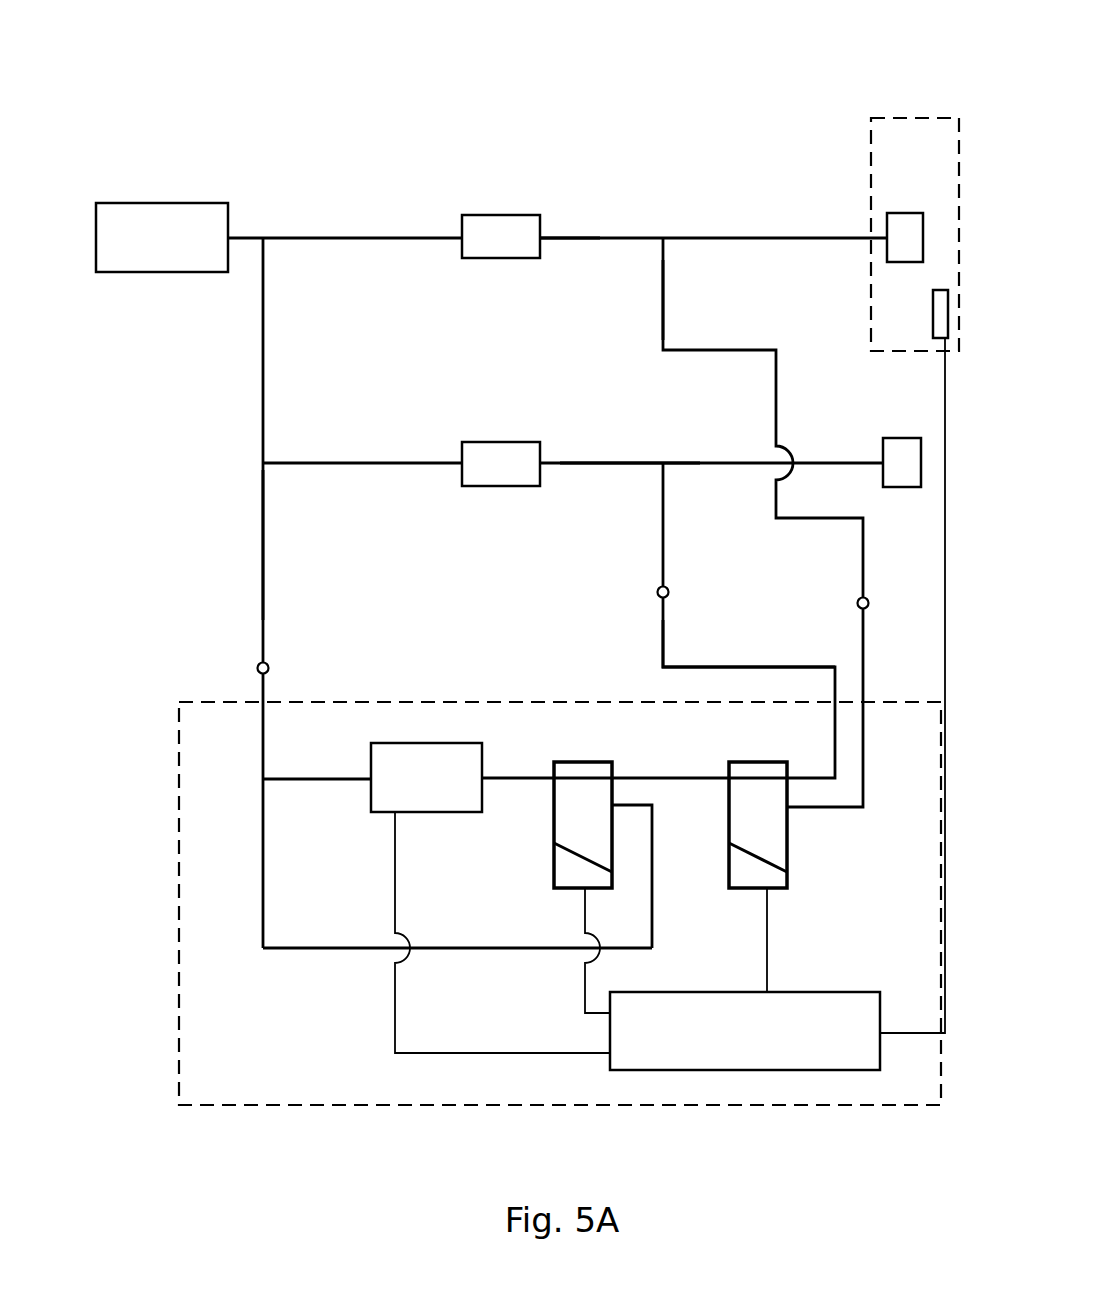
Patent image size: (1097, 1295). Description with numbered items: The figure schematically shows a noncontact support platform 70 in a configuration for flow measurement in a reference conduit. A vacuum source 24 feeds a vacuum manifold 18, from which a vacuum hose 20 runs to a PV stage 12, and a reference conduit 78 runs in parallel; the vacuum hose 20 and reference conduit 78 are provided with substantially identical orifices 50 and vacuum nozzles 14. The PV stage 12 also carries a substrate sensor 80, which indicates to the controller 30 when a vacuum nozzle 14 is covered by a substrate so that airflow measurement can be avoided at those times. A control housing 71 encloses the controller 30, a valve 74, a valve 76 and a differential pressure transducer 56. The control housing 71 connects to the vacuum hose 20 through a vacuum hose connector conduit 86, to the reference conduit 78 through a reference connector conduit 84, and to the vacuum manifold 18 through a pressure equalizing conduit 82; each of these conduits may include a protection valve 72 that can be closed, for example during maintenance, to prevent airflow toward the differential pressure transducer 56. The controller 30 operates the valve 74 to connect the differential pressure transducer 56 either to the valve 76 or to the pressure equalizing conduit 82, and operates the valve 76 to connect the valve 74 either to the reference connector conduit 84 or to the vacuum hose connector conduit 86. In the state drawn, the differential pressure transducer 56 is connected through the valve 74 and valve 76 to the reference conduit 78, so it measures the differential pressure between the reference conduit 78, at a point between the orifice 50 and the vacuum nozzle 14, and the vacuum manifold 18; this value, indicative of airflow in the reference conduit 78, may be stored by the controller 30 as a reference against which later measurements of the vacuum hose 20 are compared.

The noncontact support platform 70 is at (287, 132).
The vacuum source 24 is at (116, 202).
The orifice 50 is at (488, 215).
The vacuum hose 20 is at (603, 238).
The PV stage 12 is at (885, 118).
The vacuum nozzle 14 is at (898, 213).
The substrate sensor 80 is at (933, 322).
The vacuum hose connector conduit 86 is at (663, 302).
The reference conduit 78 is at (631, 463).
The vacuum manifold 18 is at (263, 548).
The protection valve 72 is at (258, 668).
The reference connector conduit 84 is at (663, 652).
The control housing 71 is at (271, 1107).
The differential pressure transducer 56 is at (437, 742).
The valve 74 is at (553, 822).
The valve 76 is at (788, 852).
The pressure equalizing conduit 82 is at (328, 948).
The controller 30 is at (787, 1068).